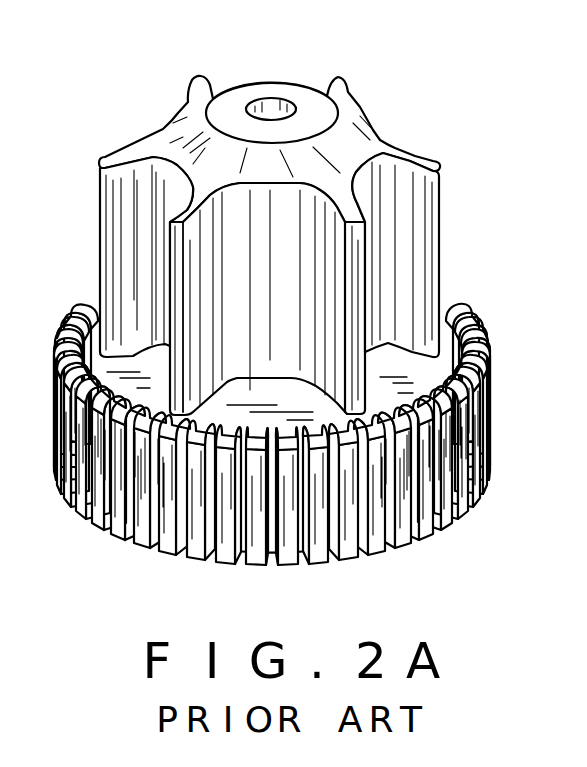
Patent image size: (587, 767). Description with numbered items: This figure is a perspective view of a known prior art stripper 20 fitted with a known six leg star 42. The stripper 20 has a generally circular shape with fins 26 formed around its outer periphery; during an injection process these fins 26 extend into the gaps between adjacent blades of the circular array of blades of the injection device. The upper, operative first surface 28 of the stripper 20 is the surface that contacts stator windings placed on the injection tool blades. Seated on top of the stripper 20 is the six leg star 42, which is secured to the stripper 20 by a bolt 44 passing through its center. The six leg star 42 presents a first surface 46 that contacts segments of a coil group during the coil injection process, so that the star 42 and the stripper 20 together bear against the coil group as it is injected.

The stripper 20 is at (301, 315).
The fins 26 is at (420, 499).
The first surface 28 is at (245, 408).
The six leg star 42 is at (287, 224).
The bolt 44 is at (273, 107).
The first surface 46 is at (370, 137).